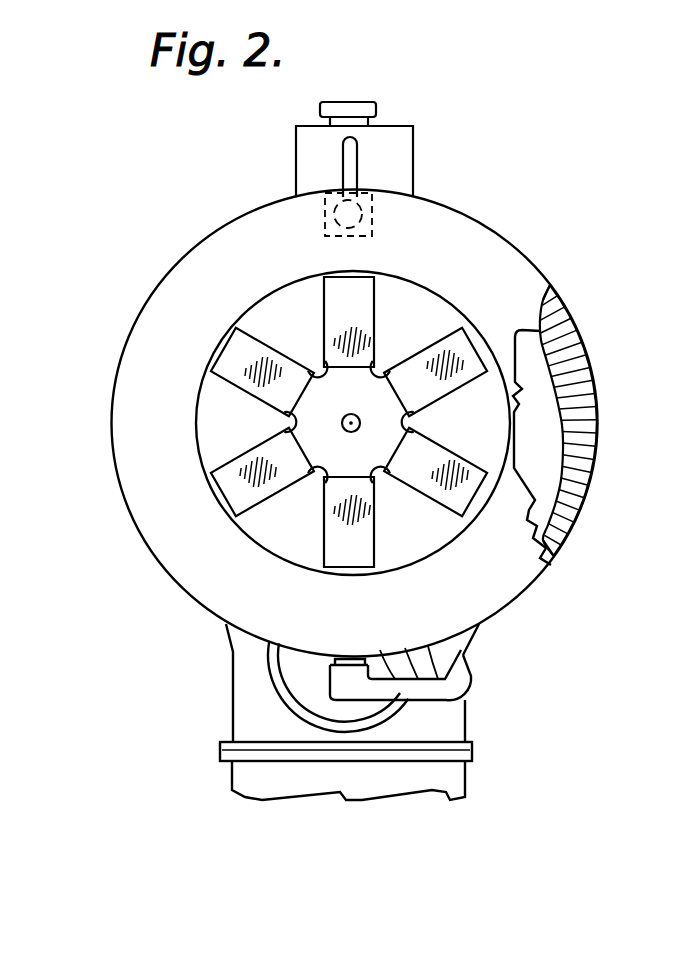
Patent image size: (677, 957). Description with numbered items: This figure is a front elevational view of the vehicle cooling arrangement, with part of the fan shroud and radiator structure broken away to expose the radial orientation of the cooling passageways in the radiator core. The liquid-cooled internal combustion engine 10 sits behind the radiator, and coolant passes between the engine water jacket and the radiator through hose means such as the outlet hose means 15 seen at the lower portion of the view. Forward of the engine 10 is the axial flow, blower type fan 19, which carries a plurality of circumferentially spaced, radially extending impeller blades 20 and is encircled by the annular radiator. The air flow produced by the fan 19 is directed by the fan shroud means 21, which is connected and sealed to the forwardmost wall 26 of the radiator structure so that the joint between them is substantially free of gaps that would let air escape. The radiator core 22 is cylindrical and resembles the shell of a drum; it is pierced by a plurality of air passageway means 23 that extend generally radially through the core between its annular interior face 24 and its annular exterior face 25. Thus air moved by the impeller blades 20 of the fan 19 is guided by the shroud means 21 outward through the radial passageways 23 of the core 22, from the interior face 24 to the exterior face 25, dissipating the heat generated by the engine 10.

The internal combustion engine 10 is at (260, 697).
The coolant outlet hose means 15 is at (467, 685).
The fan 19 is at (358, 464).
The impeller blades 20 is at (357, 318).
The fan shroud means 21 is at (194, 422).
The radiator core 22 is at (545, 300).
The air passageway means 23 is at (568, 347).
The annular interior face 24 is at (583, 388).
The annular exterior face 25 is at (598, 425).
The forwardmost wall 26 is at (440, 237).